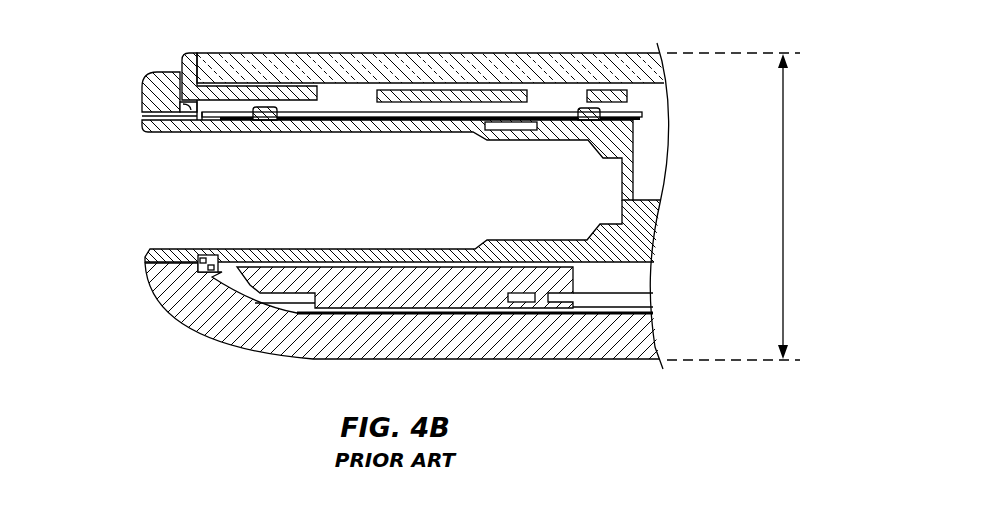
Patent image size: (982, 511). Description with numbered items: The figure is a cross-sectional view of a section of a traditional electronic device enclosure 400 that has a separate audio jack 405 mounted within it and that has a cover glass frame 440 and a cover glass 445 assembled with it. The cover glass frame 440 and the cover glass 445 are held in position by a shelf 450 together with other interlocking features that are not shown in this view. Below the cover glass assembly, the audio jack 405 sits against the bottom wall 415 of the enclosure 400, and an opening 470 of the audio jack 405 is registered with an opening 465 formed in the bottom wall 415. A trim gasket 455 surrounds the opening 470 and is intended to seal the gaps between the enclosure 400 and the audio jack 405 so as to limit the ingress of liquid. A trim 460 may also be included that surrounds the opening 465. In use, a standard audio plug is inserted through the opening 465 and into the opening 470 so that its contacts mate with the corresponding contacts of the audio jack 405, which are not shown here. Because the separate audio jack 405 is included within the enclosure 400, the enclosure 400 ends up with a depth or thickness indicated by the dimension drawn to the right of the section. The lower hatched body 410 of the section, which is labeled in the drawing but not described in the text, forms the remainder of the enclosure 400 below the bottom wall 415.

The electronic device enclosure 400 is at (236, 383).
The audio jack 405 is at (640, 245).
The rear housing 410 is at (548, 342).
The bottom wall 415 is at (153, 98).
The cover glass frame 440 is at (193, 53).
The cover glass 445 is at (237, 67).
The shelf 450 is at (188, 106).
The trim gasket 455 is at (212, 276).
The trim 460 is at (143, 123).
The opening of bottom wall 465 is at (144, 168).
The opening of audio jack 470 is at (199, 215).